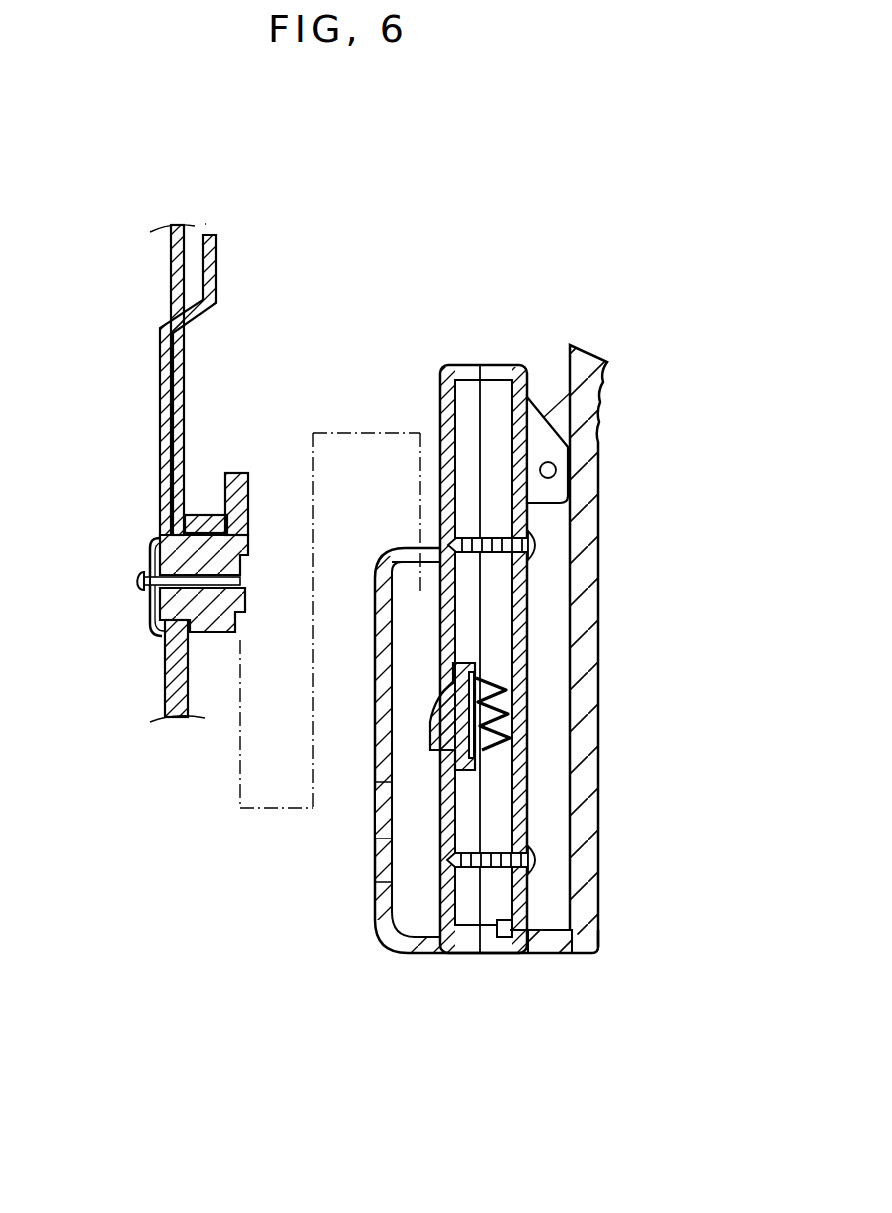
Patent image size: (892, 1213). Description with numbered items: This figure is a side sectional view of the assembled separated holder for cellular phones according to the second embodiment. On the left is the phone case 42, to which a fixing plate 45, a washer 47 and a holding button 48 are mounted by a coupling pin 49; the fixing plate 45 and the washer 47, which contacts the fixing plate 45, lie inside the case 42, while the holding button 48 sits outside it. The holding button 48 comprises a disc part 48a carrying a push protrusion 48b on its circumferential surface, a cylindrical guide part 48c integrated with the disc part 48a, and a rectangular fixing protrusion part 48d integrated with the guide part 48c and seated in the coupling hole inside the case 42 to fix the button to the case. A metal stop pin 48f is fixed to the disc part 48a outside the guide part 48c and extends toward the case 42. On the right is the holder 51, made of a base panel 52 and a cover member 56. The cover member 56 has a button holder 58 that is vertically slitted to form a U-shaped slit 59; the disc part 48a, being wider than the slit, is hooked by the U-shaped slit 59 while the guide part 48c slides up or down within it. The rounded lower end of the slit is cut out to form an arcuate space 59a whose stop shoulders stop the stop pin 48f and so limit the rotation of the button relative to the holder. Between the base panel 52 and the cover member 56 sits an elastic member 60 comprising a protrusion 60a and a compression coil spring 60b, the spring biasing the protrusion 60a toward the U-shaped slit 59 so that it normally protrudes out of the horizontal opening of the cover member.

The phone case 42 is at (170, 252).
The fixing plate 45 is at (206, 289).
The washer 47 is at (156, 545).
The holding button 48 is at (255, 508).
The disc part 48a is at (176, 702).
The push protrusion 48b is at (236, 472).
The cylindrical guide part 48c is at (200, 652).
The rectangular fixing protrusion part 48d is at (160, 635).
The metal stop pin 48f is at (211, 514).
The coupling pin 49 is at (140, 581).
The holder 51 is at (376, 944).
The base panel 52 is at (500, 366).
The cover member 56 is at (462, 366).
The button holder 58 is at (380, 893).
The U-shaped slit 59 is at (380, 752).
The arcuate space 59a is at (380, 797).
The elastic member 60 is at (604, 676).
The protrusion 60a is at (505, 705).
The compression coil spring 60b is at (468, 665).